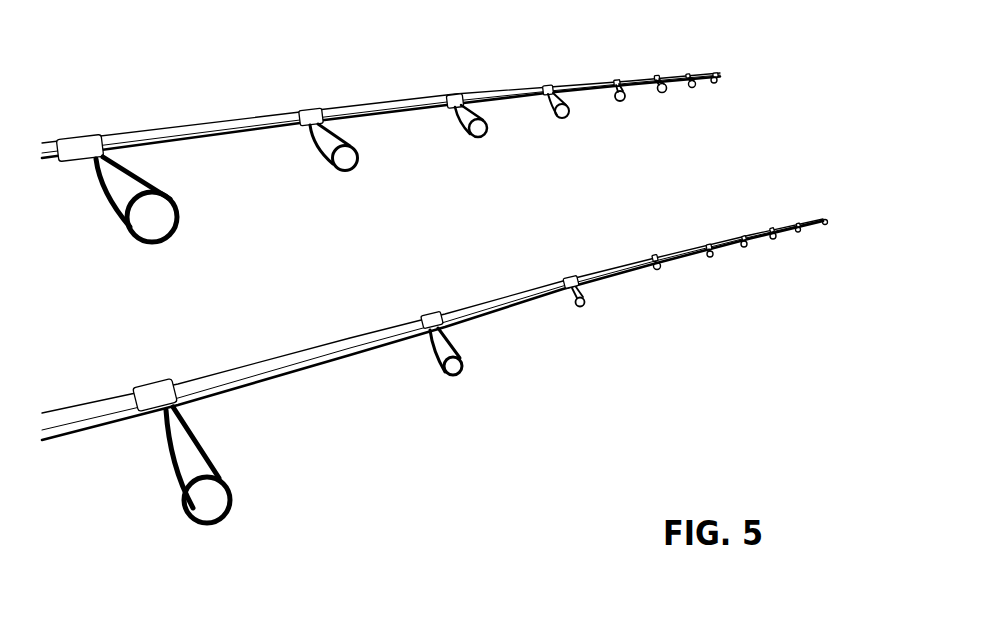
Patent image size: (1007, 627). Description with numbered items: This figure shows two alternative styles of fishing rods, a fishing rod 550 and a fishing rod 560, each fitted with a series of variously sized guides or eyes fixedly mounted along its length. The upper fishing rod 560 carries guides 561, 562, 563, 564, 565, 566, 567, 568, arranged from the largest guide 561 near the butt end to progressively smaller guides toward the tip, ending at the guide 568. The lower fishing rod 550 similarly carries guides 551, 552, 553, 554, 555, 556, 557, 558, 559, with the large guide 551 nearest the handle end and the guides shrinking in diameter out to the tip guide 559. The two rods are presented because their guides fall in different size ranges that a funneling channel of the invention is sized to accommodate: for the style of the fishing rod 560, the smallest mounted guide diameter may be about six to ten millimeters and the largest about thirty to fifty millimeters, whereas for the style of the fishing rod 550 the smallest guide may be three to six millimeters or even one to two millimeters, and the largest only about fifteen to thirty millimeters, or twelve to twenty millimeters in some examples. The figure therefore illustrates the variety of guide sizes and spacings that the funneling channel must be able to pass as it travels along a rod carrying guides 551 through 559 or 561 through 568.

The fishing rod 550 is at (265, 313).
The guide 551 is at (231, 498).
The guide 552 is at (465, 380).
The guide 553 is at (568, 275).
The guide 554 is at (655, 257).
The guide 555 is at (712, 257).
The guide 556 is at (746, 247).
The guide 557 is at (773, 229).
The guide 558 is at (798, 223).
The guide 559 is at (826, 224).
The fishing rod 560 is at (72, 242).
The guide 561 is at (181, 240).
The guide 562 is at (362, 172).
The guide 563 is at (462, 95).
The guide 564 is at (547, 86).
The guide 565 is at (621, 102).
The guide 566 is at (663, 93).
The guide 567 is at (688, 74).
The guide 568 is at (717, 72).